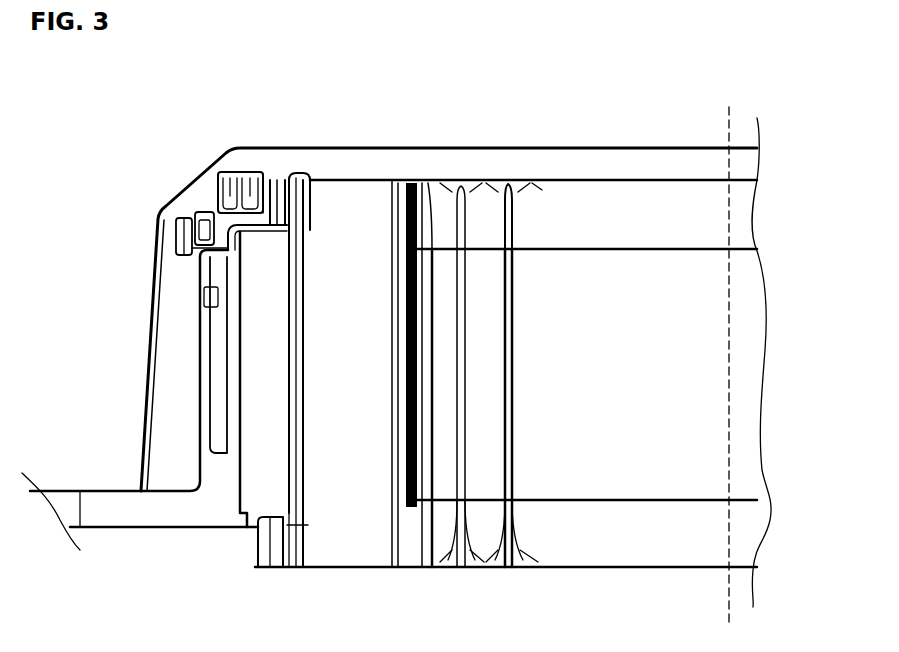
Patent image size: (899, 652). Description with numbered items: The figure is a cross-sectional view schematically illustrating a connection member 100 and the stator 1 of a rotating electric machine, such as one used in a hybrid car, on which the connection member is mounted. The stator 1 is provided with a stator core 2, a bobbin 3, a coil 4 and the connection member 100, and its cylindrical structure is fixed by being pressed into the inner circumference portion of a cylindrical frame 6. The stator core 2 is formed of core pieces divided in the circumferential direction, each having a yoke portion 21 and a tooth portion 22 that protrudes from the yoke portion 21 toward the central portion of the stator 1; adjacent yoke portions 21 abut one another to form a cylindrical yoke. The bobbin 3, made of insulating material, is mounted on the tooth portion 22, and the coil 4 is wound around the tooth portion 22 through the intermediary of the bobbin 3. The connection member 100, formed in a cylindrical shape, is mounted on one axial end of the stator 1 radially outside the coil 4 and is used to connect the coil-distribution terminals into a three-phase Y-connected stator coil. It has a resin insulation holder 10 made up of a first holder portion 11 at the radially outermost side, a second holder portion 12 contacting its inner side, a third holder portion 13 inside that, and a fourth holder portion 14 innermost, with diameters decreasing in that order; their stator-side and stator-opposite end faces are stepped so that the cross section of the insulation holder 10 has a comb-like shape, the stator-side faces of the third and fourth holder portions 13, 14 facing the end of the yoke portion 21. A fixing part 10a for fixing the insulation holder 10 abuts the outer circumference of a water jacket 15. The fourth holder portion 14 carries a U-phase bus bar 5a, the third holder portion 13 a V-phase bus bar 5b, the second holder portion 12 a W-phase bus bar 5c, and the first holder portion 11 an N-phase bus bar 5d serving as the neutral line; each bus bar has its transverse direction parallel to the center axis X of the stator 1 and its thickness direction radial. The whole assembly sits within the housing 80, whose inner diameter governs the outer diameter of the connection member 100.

The stator 1 is at (545, 183).
The stator core 2 is at (186, 612).
The bobbin 3 is at (447, 212).
The coil 4 is at (353, 500).
The U-phase bus bar 5a is at (254, 198).
The V-phase bus bar 5b is at (229, 198).
The W-phase bus bar 5c is at (200, 230).
The N-phase bus bar 5d is at (205, 247).
The frame 6 is at (120, 510).
The insulation holder 10 is at (208, 198).
The fixing part 10a is at (200, 323).
The first holder portion 11 is at (180, 238).
The second holder portion 12 is at (213, 207).
The third holder portion 13 is at (222, 200).
The fourth holder portion 14 is at (240, 197).
The water jacket 15 is at (207, 382).
The yoke portion 21 is at (240, 483).
The tooth portion 22 is at (285, 485).
The housing 80 is at (467, 148).
The connection member 100 is at (112, 243).
The center axis X is at (727, 138).